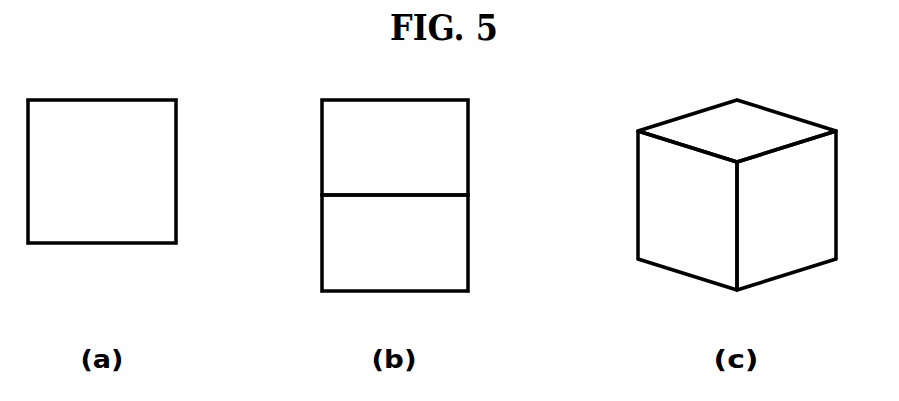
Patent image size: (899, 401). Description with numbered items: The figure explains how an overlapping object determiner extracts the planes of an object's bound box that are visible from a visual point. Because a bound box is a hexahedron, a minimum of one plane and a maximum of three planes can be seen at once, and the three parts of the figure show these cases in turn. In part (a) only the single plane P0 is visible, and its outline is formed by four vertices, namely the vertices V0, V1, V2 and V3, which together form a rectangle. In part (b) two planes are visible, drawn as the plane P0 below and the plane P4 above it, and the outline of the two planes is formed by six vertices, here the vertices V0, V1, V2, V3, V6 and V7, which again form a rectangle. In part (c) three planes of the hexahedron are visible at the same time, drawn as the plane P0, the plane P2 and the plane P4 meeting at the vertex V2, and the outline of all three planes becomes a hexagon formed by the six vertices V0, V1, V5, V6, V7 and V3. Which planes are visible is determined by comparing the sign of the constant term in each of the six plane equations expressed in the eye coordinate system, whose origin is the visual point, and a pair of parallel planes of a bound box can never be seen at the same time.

The plane P0 is at (382, 195).
The plane P2 is at (786, 210).
The polygon P4 (top face) P4 is at (579, 147).
The vertex V0 is at (328, 282).
The vertex V1 is at (456, 287).
The vertex V2 is at (469, 138).
The vertex V3 is at (326, 138).
The vertex V5 is at (855, 260).
The vertex V6 is at (662, 103).
The vertex V7 is at (528, 84).